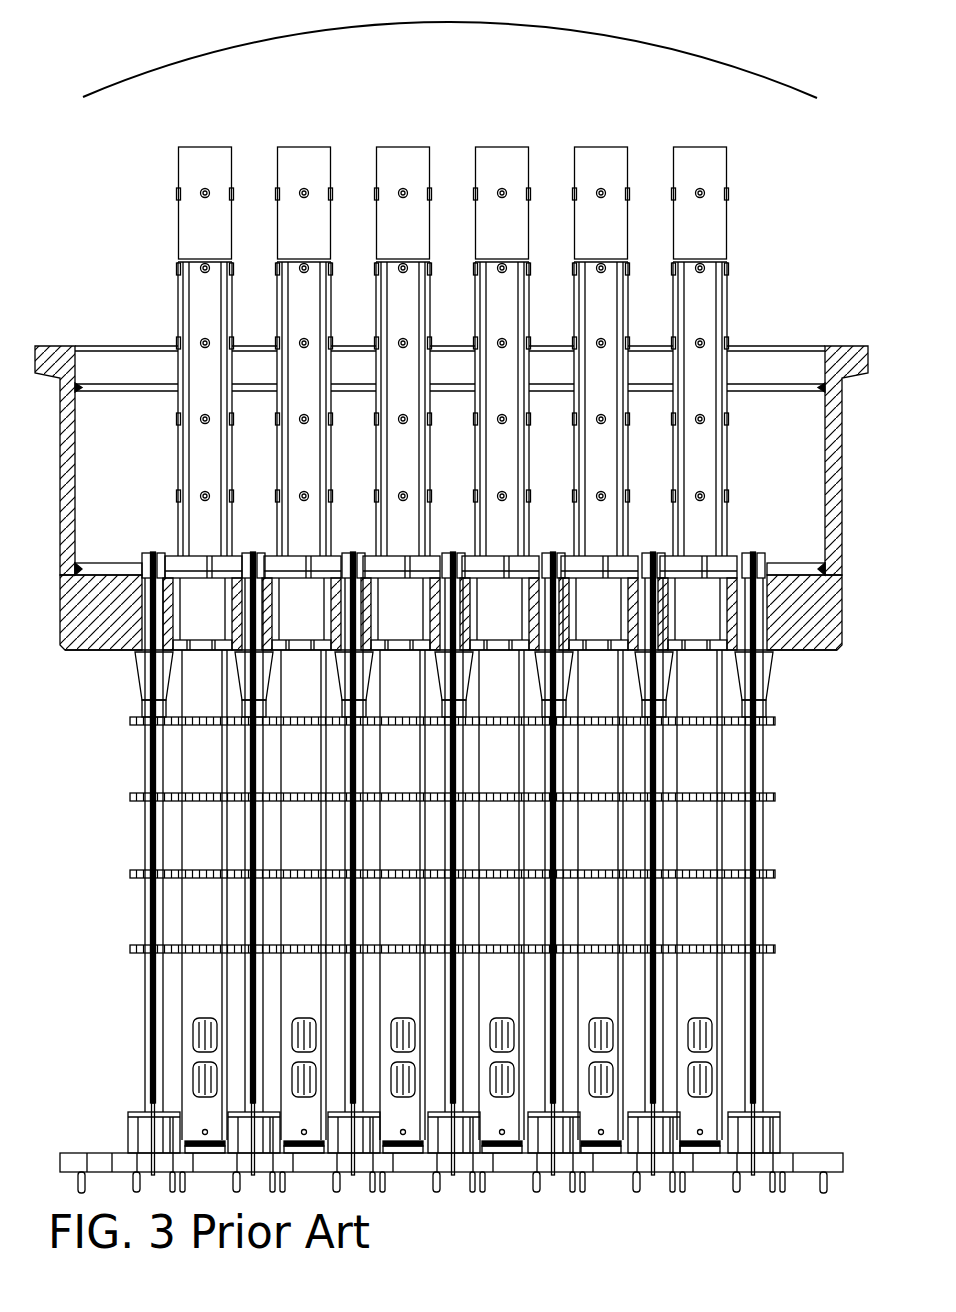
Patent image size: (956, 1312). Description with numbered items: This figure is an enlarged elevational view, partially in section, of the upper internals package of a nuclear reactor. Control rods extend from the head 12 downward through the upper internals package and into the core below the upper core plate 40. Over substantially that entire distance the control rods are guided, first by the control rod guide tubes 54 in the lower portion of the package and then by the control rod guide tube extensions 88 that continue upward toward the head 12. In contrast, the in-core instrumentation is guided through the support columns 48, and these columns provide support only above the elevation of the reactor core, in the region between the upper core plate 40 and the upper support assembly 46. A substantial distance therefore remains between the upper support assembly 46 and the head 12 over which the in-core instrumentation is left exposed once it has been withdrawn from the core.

The head 12 is at (597, 30).
The upper support assembly 46 is at (848, 346).
The control rod guide tube extensions 88 is at (450, 398).
The support columns 48 is at (472, 872).
The control rod guide tubes 54 is at (452, 901).
The upper core plate 40 is at (785, 1153).